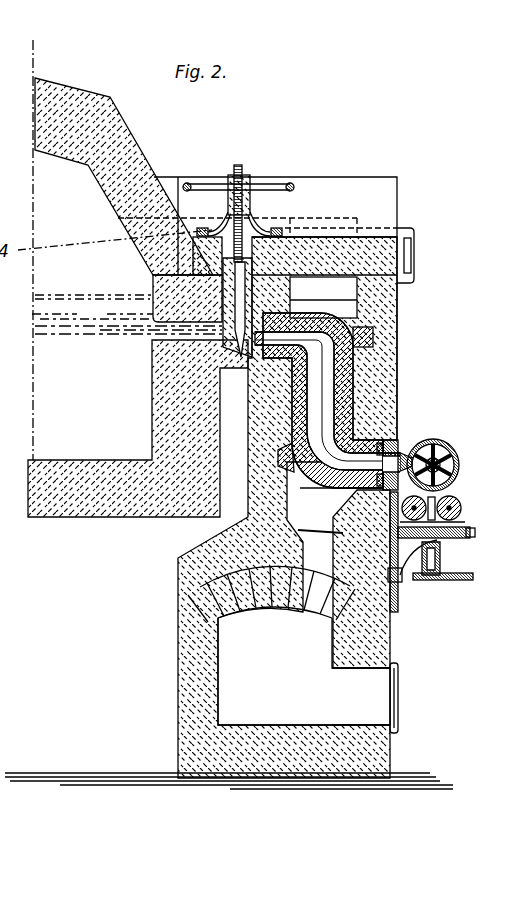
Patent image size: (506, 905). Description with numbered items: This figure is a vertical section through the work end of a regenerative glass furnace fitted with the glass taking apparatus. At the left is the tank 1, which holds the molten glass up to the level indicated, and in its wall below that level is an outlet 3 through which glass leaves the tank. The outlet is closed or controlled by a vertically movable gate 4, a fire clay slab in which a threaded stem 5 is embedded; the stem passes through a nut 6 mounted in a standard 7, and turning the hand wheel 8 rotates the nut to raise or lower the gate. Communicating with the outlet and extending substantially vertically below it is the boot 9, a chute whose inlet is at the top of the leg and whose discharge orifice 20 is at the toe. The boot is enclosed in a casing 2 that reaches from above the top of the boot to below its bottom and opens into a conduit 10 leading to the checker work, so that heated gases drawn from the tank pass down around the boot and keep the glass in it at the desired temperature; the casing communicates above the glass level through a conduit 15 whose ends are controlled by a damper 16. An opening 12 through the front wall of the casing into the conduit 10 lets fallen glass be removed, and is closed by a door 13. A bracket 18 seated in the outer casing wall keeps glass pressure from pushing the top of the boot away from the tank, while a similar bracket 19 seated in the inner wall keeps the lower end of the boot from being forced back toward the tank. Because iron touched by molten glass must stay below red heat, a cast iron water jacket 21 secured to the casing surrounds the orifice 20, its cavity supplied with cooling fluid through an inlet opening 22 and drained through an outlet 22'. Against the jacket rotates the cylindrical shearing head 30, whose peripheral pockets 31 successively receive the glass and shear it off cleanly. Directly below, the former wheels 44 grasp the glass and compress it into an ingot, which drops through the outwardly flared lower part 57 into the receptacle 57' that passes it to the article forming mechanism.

The tank 1 is at (140, 435).
The casing 2 is at (383, 397).
The outlet 3 is at (128, 336).
The gate 4 is at (252, 272).
The stem 5 is at (250, 250).
The nut 6 is at (240, 192).
The standard 7 is at (212, 236).
The hand wheel 8 is at (265, 187).
The boot 9 is at (327, 389).
The conduit 10 is at (289, 627).
The opening 12 is at (361, 696).
The door 13 is at (398, 694).
The conduit 15 is at (347, 294).
The damper 16 is at (414, 229).
The bracket 18 is at (373, 335).
The bracket 19 is at (278, 462).
The discharge orifice 20 is at (383, 440).
The water jacket 21 is at (400, 444).
The inlet opening 22 is at (341, 499).
The outlet 22' is at (439, 450).
The shearing head 30 is at (459, 462).
The pockets 31 is at (441, 469).
The wheels 44 is at (463, 507).
The flared lower part 57 is at (450, 558).
The receptacle 57' is at (443, 588).